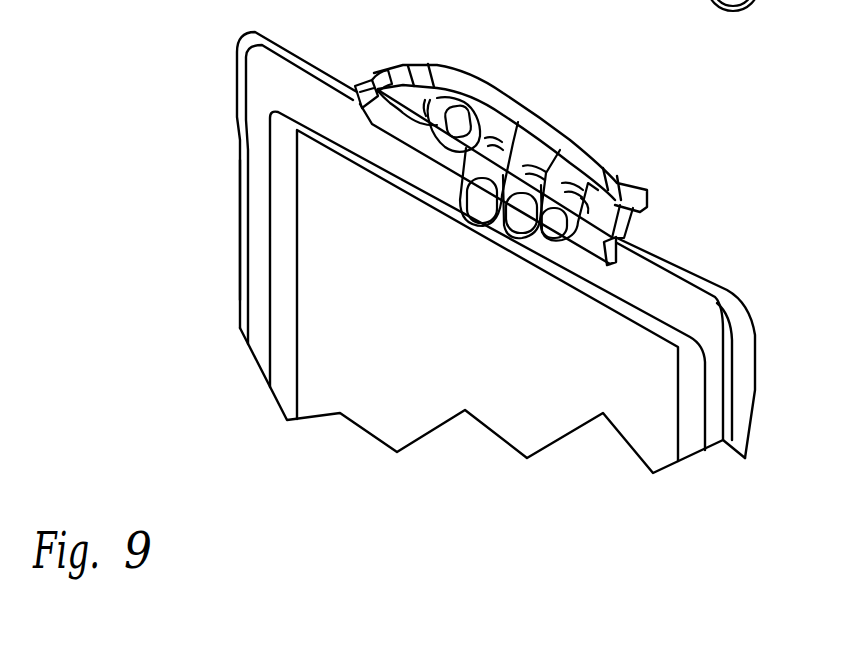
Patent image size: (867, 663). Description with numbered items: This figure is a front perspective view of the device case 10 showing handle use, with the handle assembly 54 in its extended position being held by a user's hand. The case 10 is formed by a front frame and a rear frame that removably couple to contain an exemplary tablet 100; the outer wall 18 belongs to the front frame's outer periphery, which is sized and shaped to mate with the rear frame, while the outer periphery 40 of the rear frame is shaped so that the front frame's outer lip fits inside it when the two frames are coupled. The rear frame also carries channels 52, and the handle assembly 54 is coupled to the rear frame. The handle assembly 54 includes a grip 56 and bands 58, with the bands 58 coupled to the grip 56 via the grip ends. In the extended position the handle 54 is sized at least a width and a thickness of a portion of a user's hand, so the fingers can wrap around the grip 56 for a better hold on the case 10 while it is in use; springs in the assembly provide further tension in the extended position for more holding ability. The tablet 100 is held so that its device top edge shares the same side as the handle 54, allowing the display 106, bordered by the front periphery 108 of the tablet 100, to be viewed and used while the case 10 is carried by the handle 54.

The device case 10 is at (165, 385).
The outer wall 18 is at (266, 78).
The outer periphery 40 is at (238, 178).
The channels 52 is at (372, 82).
The handle assembly 54 is at (623, 113).
The grip 56 is at (536, 113).
The bands 58 is at (380, 80).
The tablet 100 is at (465, 327).
The display 106 is at (328, 315).
The front periphery 108 is at (282, 242).